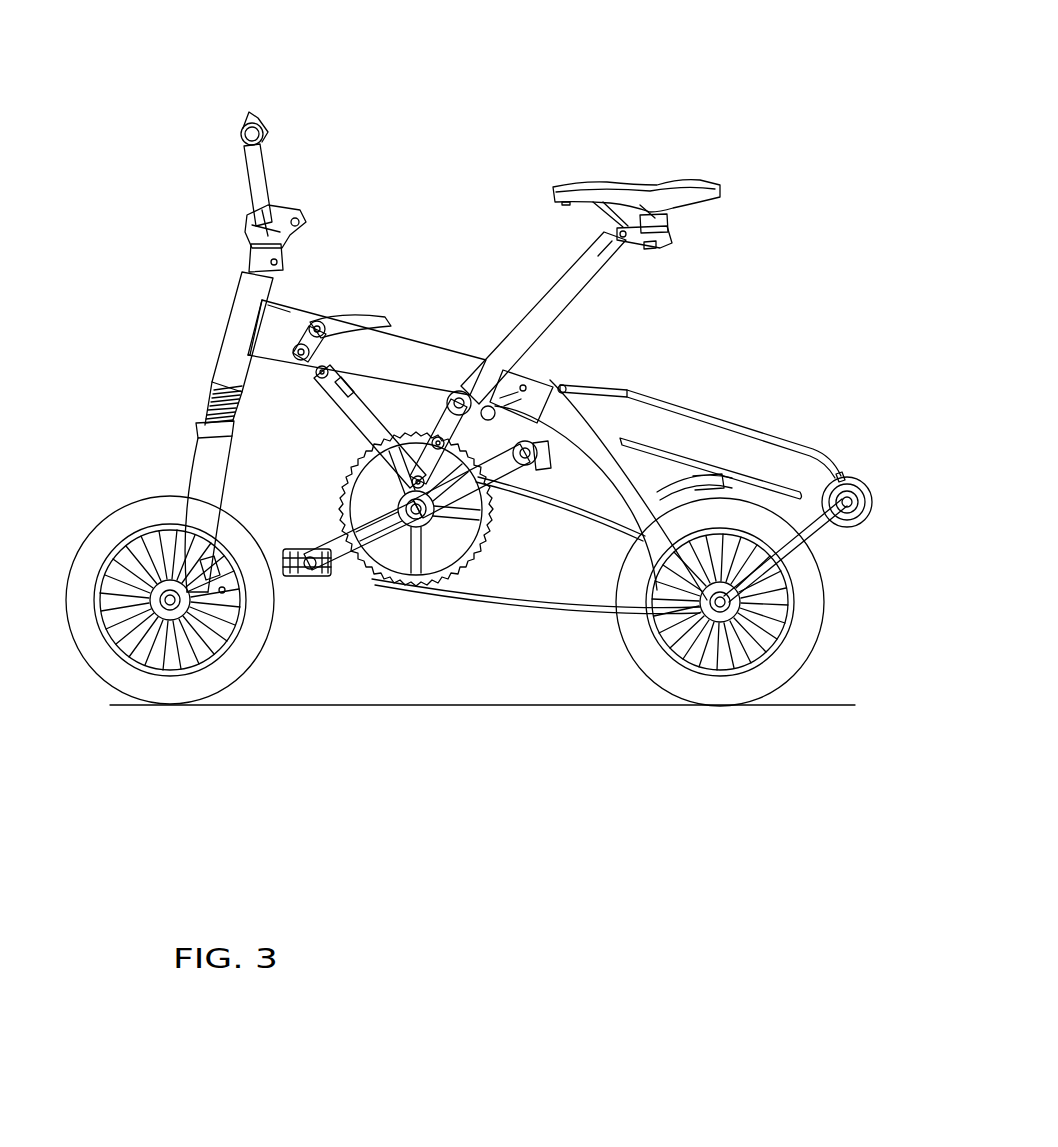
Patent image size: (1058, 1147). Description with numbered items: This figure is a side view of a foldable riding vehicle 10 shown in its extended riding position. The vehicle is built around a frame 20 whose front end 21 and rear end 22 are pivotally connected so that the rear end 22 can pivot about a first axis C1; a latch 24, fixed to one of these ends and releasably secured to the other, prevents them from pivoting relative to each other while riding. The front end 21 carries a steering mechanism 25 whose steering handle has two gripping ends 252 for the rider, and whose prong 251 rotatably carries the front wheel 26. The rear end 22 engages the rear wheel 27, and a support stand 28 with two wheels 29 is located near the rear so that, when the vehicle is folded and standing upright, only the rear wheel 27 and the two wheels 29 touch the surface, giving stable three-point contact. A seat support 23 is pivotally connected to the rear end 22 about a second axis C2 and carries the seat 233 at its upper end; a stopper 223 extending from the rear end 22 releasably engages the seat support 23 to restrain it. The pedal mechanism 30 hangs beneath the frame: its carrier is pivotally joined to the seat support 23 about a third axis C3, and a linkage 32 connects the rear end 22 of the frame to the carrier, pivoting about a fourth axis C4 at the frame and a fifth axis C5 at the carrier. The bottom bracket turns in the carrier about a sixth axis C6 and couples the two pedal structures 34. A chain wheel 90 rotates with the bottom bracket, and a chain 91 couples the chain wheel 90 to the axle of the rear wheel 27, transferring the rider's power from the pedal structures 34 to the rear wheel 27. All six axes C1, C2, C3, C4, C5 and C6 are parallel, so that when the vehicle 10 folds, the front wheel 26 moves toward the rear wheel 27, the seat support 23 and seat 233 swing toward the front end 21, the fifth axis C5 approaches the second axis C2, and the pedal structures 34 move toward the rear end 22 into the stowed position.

The foldable riding vehicle 10 is at (471, 104).
The frame 20 is at (421, 264).
The front end 21 is at (305, 318).
The rear end 22 is at (400, 358).
The seat support 23 is at (572, 296).
The latch 24 is at (362, 316).
The steering mechanism 25 is at (198, 385).
The front wheel 26 is at (249, 652).
The rear wheel 27 is at (800, 652).
The support stand 28 is at (822, 530).
The wheels 29 is at (848, 475).
The pedal mechanism 30 is at (384, 592).
The linkage 32 is at (346, 411).
The pedal structures 34 is at (345, 538).
The chain wheel 90 is at (486, 531).
The chain 91 is at (526, 609).
The stopper 223 is at (526, 374).
The seat 233 is at (656, 184).
The prong 251 is at (196, 468).
The gripping ends 252 is at (262, 168).
The first axis C1 is at (300, 361).
The second axis C2 is at (462, 391).
The third axis C3 is at (438, 436).
The fourth axis C4 is at (320, 380).
The fifth axis C5 is at (419, 478).
The sixth axis C6 is at (406, 507).